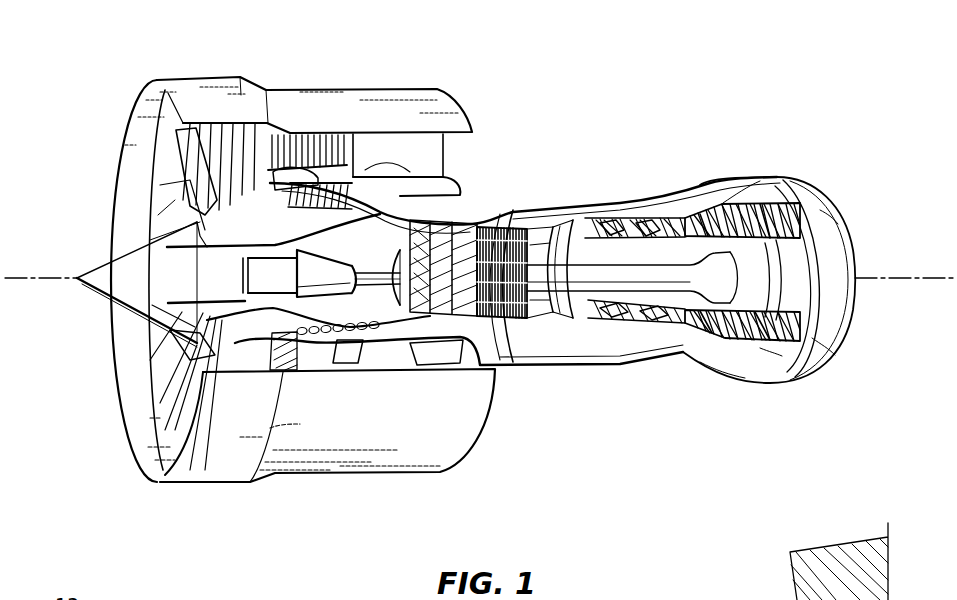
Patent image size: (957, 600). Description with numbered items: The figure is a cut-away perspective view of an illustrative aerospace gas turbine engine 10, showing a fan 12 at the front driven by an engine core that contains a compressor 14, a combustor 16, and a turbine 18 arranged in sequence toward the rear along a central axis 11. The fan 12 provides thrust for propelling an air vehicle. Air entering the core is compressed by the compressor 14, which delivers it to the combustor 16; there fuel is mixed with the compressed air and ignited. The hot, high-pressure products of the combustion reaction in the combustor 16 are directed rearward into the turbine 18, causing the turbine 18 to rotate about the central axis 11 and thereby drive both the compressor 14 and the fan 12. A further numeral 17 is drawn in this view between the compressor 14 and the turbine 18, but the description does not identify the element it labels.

The gas turbine engine 10 is at (698, 62).
The central axis 11 is at (30, 278).
The fan 12 is at (147, 363).
The compressor 14 is at (467, 223).
The combustor 16 is at (627, 223).
The combustion equipment 17 is at (583, 217).
The turbine 18 is at (708, 219).